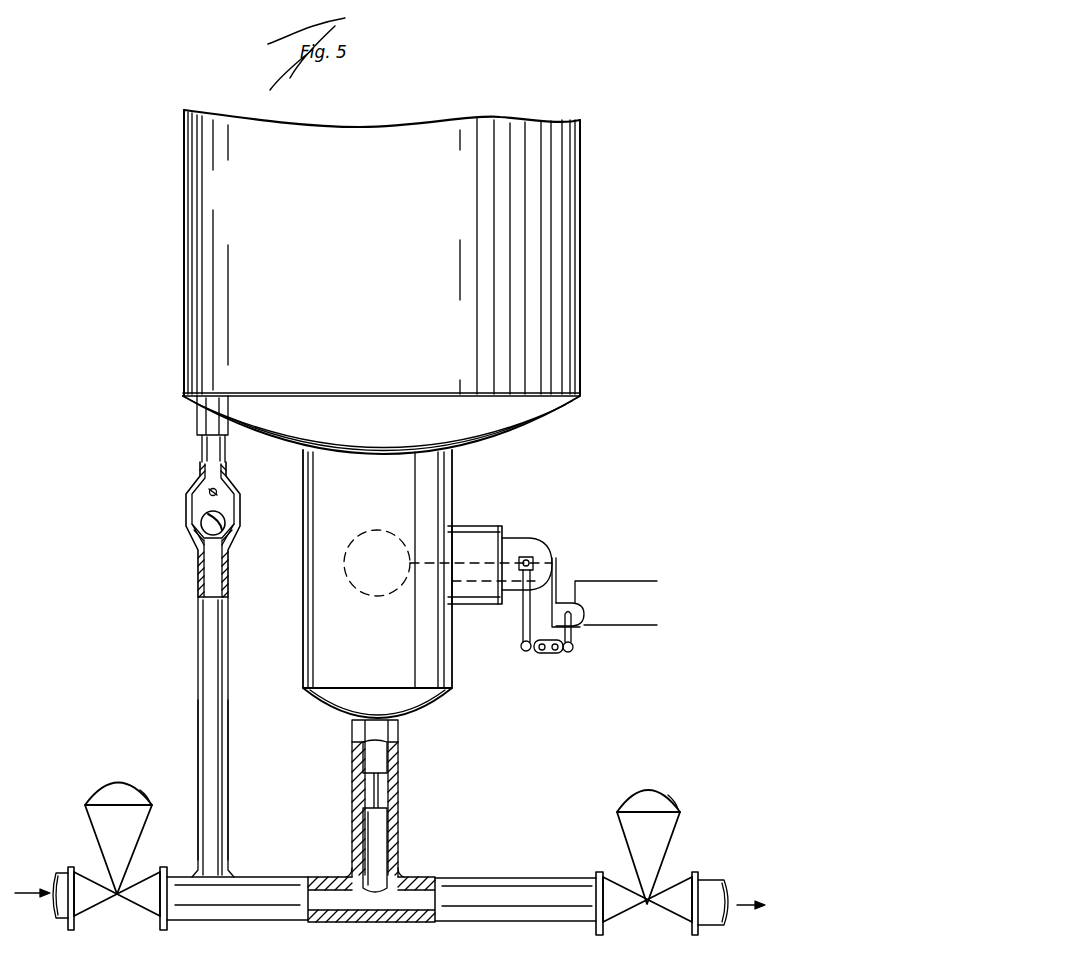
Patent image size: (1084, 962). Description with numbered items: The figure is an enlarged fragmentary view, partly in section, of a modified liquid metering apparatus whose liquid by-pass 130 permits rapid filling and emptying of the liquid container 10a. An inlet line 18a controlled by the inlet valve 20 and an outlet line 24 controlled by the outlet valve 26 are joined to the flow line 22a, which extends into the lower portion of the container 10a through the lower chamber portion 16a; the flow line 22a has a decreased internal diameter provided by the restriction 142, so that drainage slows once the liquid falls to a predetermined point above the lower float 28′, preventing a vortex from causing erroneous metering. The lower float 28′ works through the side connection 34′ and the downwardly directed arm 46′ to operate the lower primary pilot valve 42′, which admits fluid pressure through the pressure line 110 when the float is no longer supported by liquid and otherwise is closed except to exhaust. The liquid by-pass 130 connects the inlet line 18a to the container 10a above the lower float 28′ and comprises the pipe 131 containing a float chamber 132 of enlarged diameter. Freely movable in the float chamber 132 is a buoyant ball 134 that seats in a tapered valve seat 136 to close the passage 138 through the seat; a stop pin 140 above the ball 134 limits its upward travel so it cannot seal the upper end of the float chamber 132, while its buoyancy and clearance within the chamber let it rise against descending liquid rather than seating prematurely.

The liquid container 10a is at (588, 243).
The cylinder 16a is at (454, 683).
The inlet line 18a is at (283, 876).
The inlet valve 20 is at (106, 786).
The flow line 22a is at (400, 829).
The outlet line 24 is at (535, 877).
The outlet valve 26 is at (651, 790).
The lower float 28′ is at (371, 530).
The side outlet 34′ is at (477, 522).
The lower primary pilot valve 42′ is at (582, 609).
The arm 46′ is at (522, 622).
The line 110 is at (627, 580).
The liquid by-pass 130 is at (196, 697).
The pipe 131 is at (198, 662).
The float chamber 132 is at (226, 495).
The ball 134 is at (224, 518).
The tapered valve seat 136 is at (192, 523).
The passage 138 is at (228, 536).
The stop pin 140 is at (206, 490).
The restriction 142 is at (382, 790).